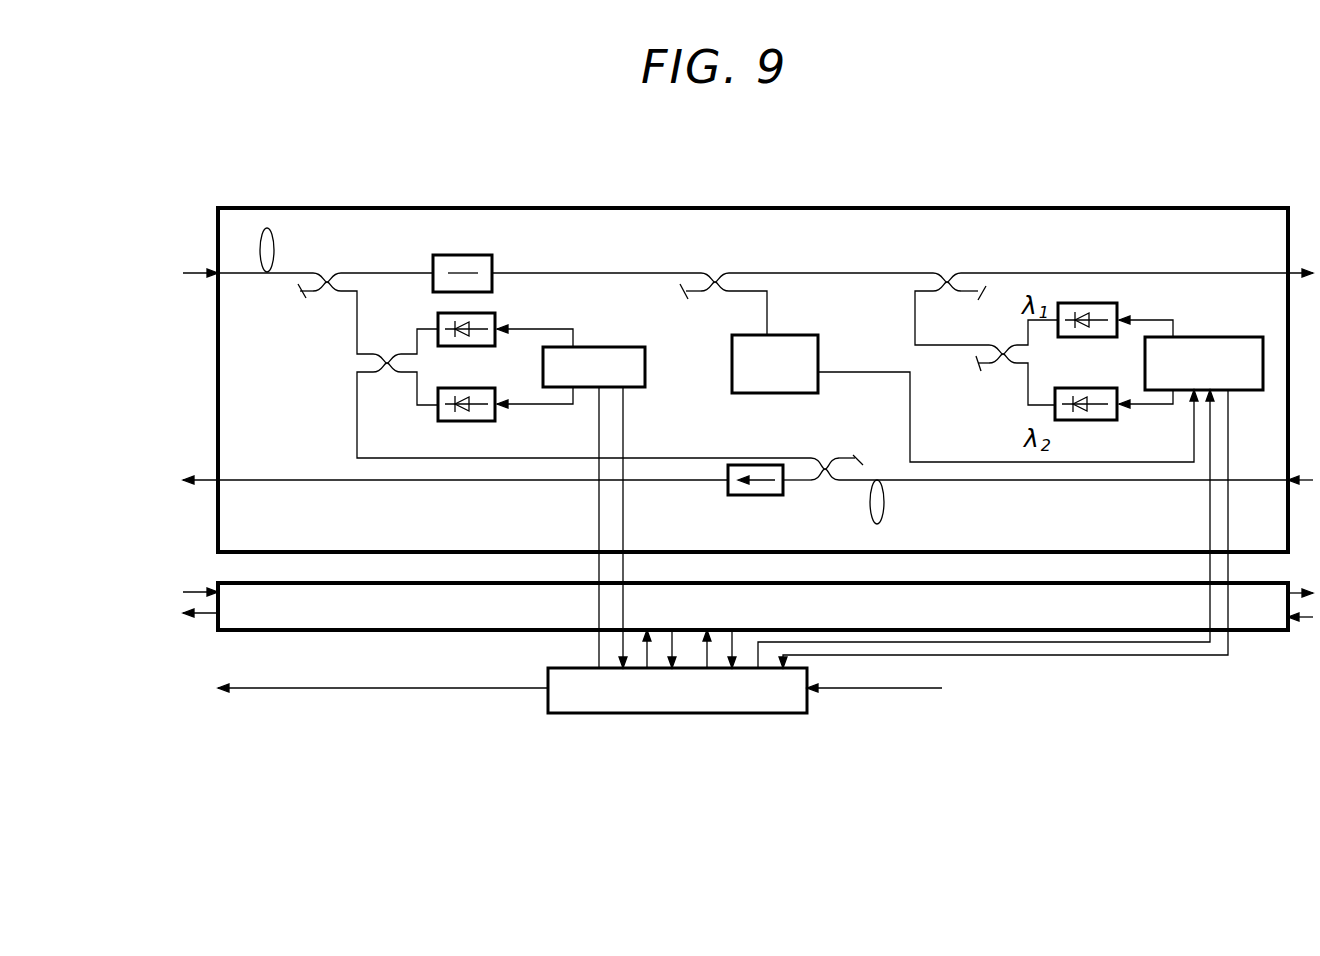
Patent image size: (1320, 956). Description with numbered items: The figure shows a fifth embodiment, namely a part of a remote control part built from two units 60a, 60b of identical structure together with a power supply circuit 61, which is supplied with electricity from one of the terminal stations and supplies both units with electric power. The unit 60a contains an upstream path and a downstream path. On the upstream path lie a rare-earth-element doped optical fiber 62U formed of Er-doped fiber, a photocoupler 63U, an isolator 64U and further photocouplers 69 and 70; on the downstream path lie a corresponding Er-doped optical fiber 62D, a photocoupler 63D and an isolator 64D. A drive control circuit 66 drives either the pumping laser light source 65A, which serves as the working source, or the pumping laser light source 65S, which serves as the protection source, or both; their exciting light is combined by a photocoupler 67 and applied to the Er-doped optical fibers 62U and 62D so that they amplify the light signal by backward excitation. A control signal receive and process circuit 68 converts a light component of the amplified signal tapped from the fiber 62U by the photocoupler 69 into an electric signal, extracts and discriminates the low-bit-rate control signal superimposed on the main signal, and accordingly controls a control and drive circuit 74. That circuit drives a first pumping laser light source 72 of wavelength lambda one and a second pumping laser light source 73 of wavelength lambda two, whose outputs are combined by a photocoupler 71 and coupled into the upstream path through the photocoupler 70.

The unit 60a is at (753, 362).
The unit 60b is at (748, 606).
The power supply circuit 61 is at (581, 671).
The rare-earth-element doped optical fiber 62U is at (300, 272).
The photocoupler 63U is at (334, 275).
The isolator 64U is at (467, 259).
The pumping laser light source 65A is at (500, 322).
The pumping laser light source 65S is at (466, 424).
The drive control circuit 66 is at (571, 496).
The photocoupler 67 is at (384, 347).
The control signal receive and process circuit 68 is at (965, 398).
The photocoupler 69 is at (704, 266).
The photocoupler 70 is at (953, 269).
The photocoupler 71 is at (994, 376).
The first pumping laser light source 72 is at (1109, 310).
The second pumping laser light source 73 is at (1100, 424).
The control and drive circuit 74 is at (1010, 492).
The photocoupler 63D is at (827, 465).
The isolator 64D is at (760, 499).
The rare-earth-element doped optical fiber 62D is at (971, 502).